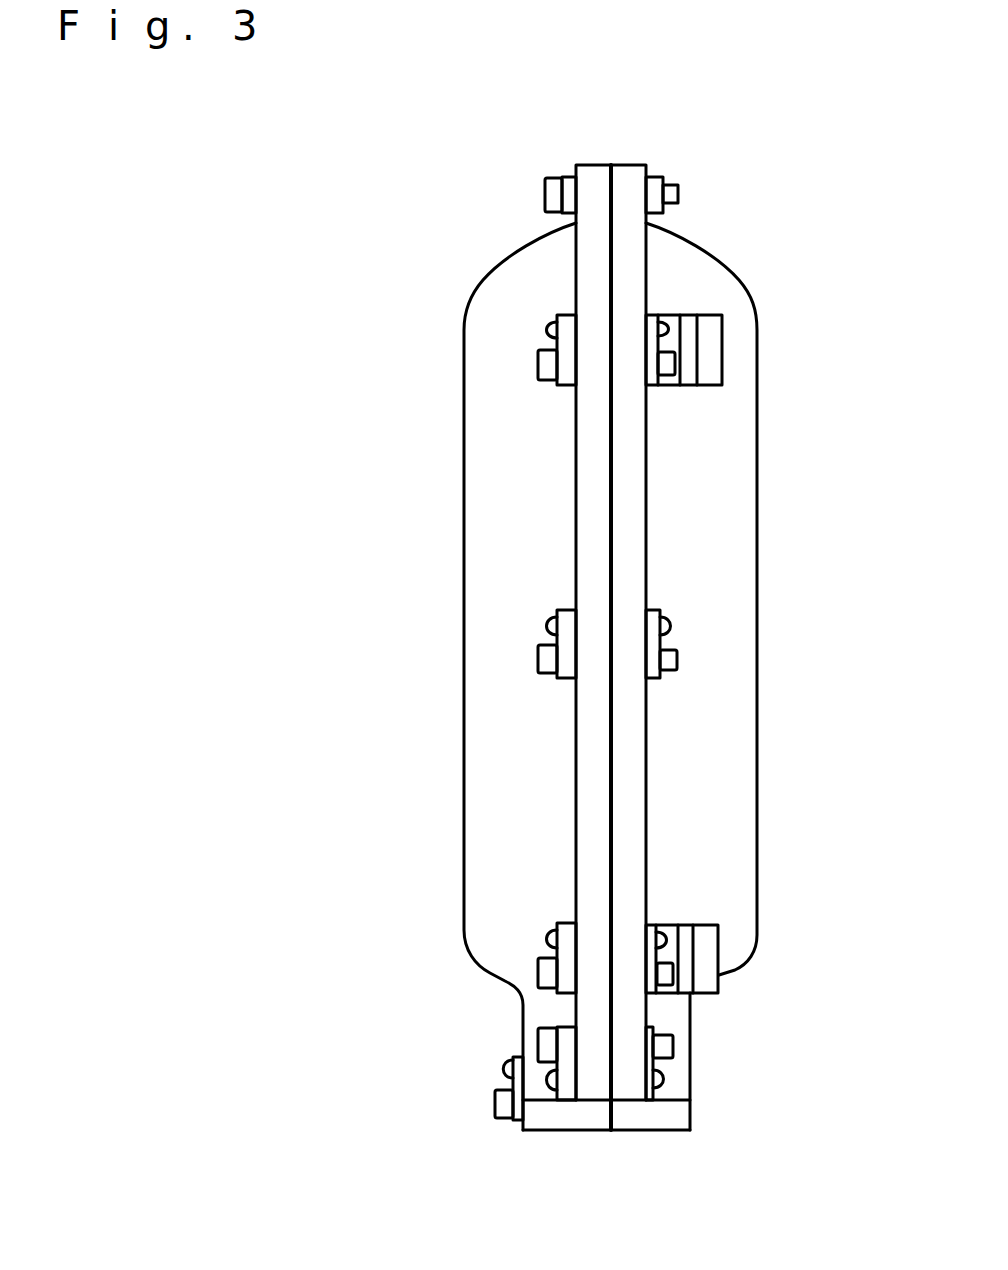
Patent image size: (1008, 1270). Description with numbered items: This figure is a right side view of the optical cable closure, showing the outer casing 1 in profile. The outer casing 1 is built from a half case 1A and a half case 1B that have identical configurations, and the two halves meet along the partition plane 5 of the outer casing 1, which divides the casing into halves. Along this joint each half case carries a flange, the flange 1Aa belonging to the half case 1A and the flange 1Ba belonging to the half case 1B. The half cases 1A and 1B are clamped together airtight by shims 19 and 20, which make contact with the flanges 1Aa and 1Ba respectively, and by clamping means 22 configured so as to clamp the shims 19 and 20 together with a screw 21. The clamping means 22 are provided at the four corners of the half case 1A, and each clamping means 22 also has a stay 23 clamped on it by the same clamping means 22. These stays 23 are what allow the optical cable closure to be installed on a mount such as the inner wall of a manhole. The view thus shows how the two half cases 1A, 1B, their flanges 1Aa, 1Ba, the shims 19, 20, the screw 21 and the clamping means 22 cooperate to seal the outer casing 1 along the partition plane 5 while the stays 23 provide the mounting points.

The outer casing 1 is at (629, 599).
The half case 1A is at (757, 565).
The half case 1B is at (464, 563).
The flange 1Aa is at (630, 462).
The flange 1Ba is at (583, 460).
The partition plane 5 is at (610, 737).
The shim 19 is at (568, 186).
The shim 20 is at (655, 186).
The screw 21 is at (545, 192).
The clamping means 22 is at (684, 194).
The stay 23 is at (708, 352).